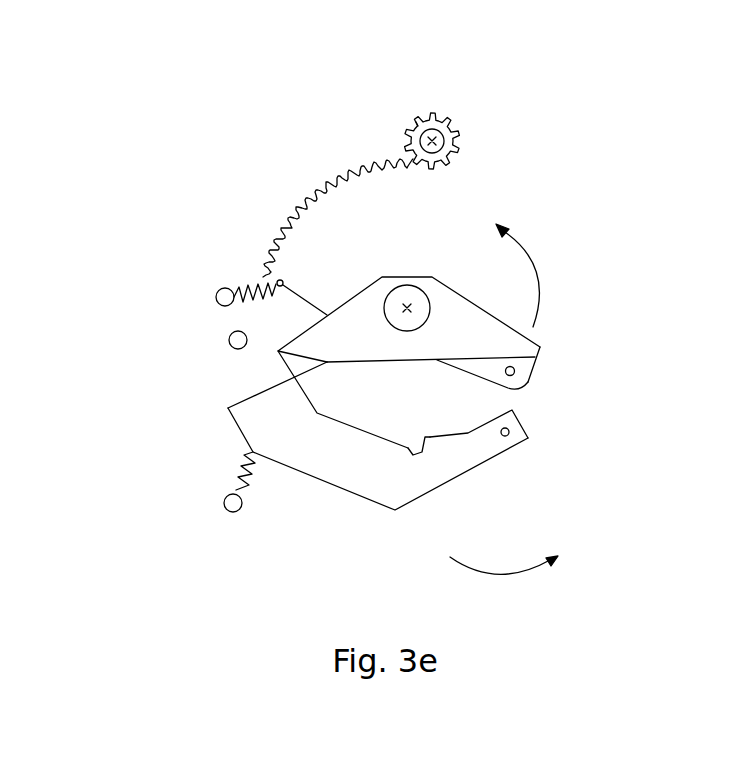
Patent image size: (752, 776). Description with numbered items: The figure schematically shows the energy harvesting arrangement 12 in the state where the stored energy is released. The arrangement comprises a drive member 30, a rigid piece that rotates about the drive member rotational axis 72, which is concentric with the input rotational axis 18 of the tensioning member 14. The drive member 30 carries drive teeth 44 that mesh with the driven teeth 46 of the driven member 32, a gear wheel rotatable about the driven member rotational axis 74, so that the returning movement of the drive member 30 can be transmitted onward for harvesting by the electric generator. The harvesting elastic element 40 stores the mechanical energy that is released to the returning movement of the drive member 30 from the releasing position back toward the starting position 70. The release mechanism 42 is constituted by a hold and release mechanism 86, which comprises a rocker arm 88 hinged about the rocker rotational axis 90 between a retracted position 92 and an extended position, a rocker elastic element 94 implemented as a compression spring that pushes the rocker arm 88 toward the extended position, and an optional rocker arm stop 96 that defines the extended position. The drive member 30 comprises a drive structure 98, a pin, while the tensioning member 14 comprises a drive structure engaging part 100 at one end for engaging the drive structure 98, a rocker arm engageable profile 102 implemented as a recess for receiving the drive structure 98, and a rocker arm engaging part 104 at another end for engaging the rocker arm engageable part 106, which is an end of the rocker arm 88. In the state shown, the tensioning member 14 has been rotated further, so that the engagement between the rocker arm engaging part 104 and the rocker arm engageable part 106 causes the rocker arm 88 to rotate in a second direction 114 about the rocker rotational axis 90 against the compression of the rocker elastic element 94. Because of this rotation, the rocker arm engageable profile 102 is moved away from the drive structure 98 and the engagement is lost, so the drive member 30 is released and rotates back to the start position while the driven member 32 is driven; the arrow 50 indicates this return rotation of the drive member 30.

The energy harvesting arrangement 12 is at (212, 93).
The tensioning member 14 is at (339, 341).
The input rotational axis 18 is at (407, 305).
The drive member 30 is at (346, 252).
The driven member 32 is at (457, 131).
The harvesting elastic element 40 is at (248, 290).
The release mechanism 42 is at (111, 383).
The drive teeth 44 is at (300, 208).
The driven teeth 46 is at (416, 122).
The rotation direction 50 is at (541, 266).
The starting position 70 is at (511, 202).
The drive member rotational axis 72 is at (408, 309).
The driven member rotational axis 74 is at (420, 141).
The hold and release mechanism 86 is at (168, 430).
The rocker arm 88 is at (329, 468).
The rocker rotational axis 90 is at (507, 433).
The retracted position 92 is at (311, 517).
The rocker elastic element 94 is at (242, 473).
The rocker arm stop 96 is at (229, 340).
The drive structure 98 is at (512, 375).
The drive structure engaging part 100 is at (525, 352).
The rocker arm engageable profile 102 is at (422, 452).
The rocker arm engaging part 104 is at (296, 373).
The rocker arm engageable part 106 is at (267, 403).
The second direction 114 is at (507, 572).